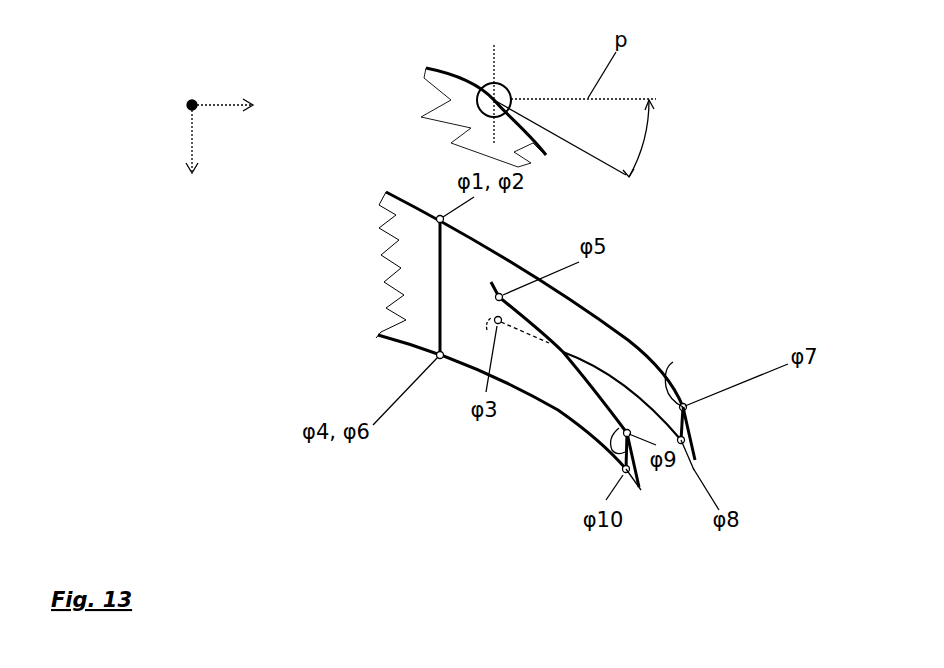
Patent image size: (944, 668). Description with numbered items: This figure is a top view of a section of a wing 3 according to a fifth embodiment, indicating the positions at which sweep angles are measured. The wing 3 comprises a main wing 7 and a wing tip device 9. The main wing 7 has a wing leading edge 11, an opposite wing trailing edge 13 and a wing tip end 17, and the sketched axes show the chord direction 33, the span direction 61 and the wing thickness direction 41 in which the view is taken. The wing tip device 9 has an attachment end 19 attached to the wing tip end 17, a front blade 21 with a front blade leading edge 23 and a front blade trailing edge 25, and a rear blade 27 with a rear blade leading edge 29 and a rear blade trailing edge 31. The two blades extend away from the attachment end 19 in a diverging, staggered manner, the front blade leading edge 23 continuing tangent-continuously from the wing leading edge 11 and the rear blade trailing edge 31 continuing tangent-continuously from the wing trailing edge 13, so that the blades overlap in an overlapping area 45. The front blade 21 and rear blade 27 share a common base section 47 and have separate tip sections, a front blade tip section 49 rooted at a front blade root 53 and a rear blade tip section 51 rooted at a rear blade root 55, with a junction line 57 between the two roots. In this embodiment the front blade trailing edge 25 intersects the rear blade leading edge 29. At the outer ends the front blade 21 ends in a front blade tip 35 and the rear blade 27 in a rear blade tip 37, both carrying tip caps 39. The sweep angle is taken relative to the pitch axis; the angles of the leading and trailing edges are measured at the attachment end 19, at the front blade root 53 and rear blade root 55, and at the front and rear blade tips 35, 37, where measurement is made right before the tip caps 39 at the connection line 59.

The wing 3 is at (378, 140).
The main wing 7 is at (411, 280).
The wing tip device 9 is at (623, 287).
The wing leading edge 11 is at (402, 203).
The wing trailing edge 13 is at (384, 344).
The wing tip end 17 is at (426, 238).
The attachment end 19 is at (450, 255).
The front blade 21 is at (586, 361).
The front blade leading edge 23 is at (458, 75).
The front blade trailing edge 25 is at (676, 352).
The rear blade 27 is at (536, 370).
The rear blade leading edge 29 is at (598, 395).
The rear blade trailing edge 31 is at (565, 420).
The chord direction 33 is at (187, 161).
The front blade tip 35 is at (684, 405).
The rear blade tip 37 is at (629, 430).
The tip caps 39 is at (690, 428).
The wing thickness direction 41 is at (175, 103).
The overlapping area 45 is at (518, 318).
The base section 47 is at (467, 285).
The front blade tip section 49 is at (606, 360).
The rear blade tip section 51 is at (600, 425).
The front blade root 53 is at (498, 273).
The rear blade root 55 is at (495, 326).
The junction line 57 is at (494, 307).
The connection line 59 is at (672, 362).
The span direction 61 is at (243, 111).